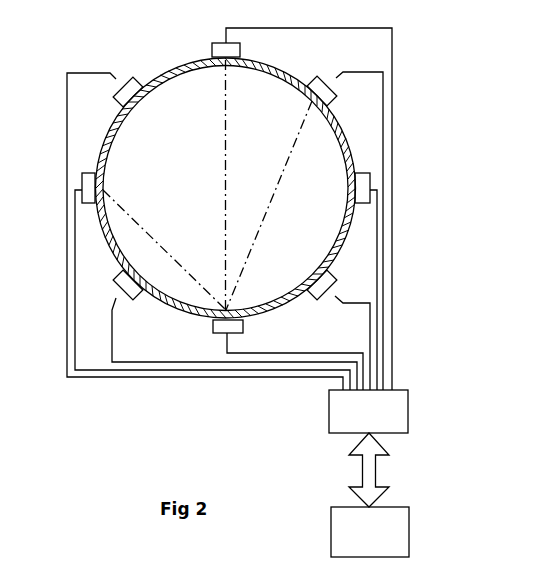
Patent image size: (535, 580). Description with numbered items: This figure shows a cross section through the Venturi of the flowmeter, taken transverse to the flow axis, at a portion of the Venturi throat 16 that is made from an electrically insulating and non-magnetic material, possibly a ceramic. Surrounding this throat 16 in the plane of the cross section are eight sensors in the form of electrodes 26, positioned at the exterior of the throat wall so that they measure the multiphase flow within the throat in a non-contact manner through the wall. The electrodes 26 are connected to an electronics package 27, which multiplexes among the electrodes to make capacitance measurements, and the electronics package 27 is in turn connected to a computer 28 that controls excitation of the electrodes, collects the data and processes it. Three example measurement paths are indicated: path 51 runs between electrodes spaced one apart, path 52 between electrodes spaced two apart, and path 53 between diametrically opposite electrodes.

The Venturi throat 16 is at (106, 130).
The electrodes 26 is at (212, 50).
The electronics package 27 is at (398, 417).
The computer 28 is at (400, 540).
The path 51 is at (131, 212).
The path 52 is at (268, 213).
The path 53 is at (224, 117).